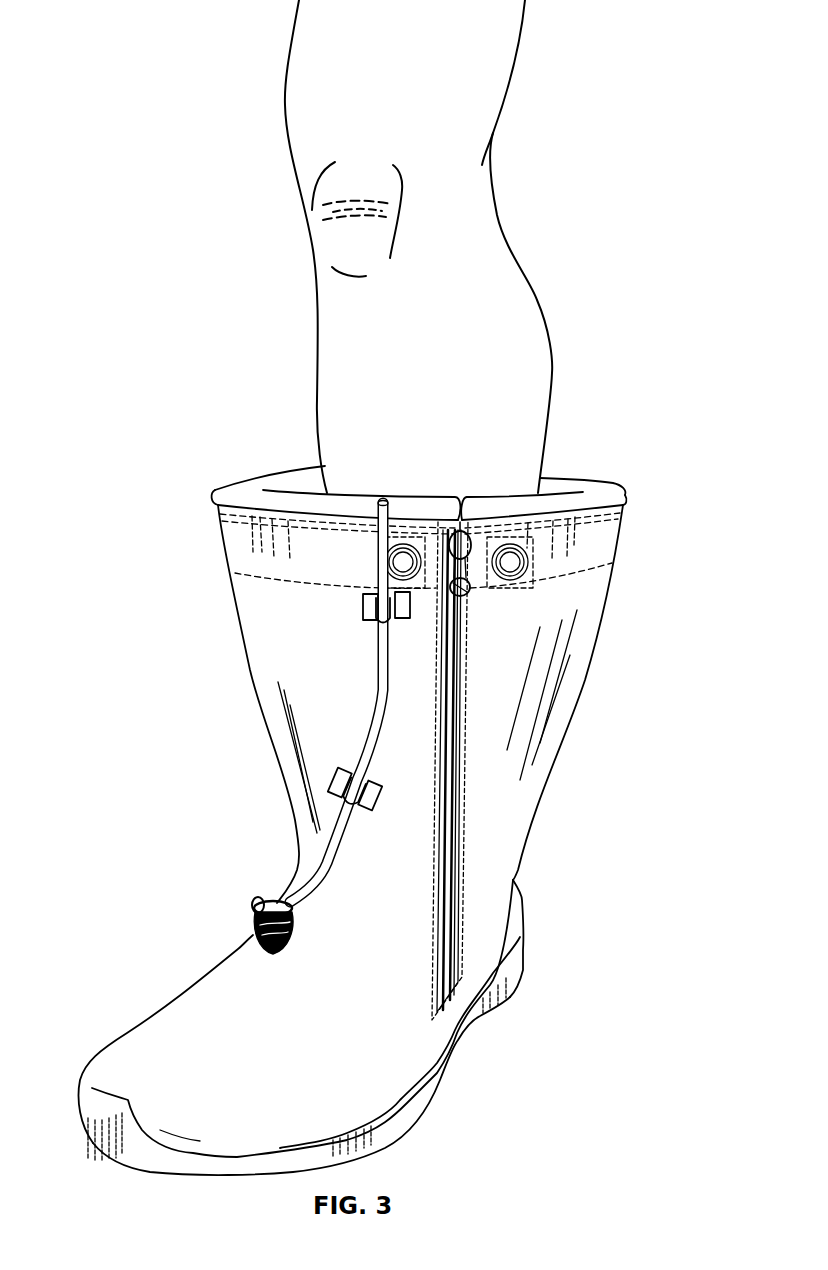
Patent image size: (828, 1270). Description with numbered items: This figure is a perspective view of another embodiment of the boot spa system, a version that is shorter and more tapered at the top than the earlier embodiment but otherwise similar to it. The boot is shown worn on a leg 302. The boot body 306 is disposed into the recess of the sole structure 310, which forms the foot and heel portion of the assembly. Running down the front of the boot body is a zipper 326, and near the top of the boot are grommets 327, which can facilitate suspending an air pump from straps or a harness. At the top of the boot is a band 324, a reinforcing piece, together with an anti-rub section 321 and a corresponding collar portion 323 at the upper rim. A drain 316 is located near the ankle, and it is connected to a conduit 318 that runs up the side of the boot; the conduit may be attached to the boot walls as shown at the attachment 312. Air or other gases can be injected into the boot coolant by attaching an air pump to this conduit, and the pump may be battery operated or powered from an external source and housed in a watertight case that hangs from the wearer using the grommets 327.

The leg of wearer 302 is at (528, 333).
The boot body 306 is at (393, 1072).
The sole structure 310 is at (517, 970).
The conduit attachment 312 is at (335, 783).
The drain 316 is at (257, 900).
The conduit 318 is at (377, 697).
The anti-rub section 321 is at (627, 492).
The left collar half 323 is at (215, 495).
The band 324 is at (230, 550).
The zipper 326 is at (470, 785).
The grommet 327 is at (527, 573).